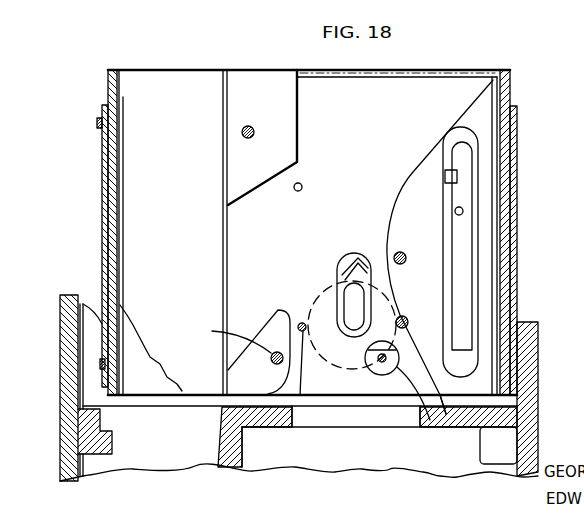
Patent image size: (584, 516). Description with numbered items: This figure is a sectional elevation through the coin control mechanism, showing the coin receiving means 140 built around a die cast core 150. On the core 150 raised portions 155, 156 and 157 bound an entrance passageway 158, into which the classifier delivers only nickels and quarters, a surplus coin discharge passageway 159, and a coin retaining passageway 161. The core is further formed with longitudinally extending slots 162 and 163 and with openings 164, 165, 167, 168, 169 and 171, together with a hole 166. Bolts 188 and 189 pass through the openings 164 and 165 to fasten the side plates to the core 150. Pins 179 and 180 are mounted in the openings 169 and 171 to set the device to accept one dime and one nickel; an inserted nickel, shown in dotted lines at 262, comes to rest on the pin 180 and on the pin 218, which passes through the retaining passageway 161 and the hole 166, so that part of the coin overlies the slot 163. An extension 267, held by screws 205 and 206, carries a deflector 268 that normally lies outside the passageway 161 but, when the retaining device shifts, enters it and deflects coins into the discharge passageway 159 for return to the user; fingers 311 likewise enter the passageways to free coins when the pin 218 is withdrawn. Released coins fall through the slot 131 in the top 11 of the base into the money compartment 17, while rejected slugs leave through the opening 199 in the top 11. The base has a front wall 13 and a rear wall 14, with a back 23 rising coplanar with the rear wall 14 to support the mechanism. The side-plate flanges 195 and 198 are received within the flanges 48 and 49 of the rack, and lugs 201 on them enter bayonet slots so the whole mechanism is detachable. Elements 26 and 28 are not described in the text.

The coin receiving means 140 is at (262, 83).
The entrance passageway 158 is at (427, 92).
The flange 48 is at (100, 110).
The lug 201 is at (100, 128).
The die cast core 150 is at (238, 98).
The flange 198 is at (503, 202).
The flange 49 is at (515, 107).
The flange 195 is at (110, 190).
The frame member 26 is at (65, 374).
The flange 28 is at (75, 426).
The front wall 13 is at (65, 459).
The opening 199 is at (163, 447).
The money compartment 17 is at (273, 451).
The slot 131 is at (377, 414).
The coin retaining passageway 161 is at (342, 356).
The top 11 is at (500, 412).
The back 23 is at (537, 374).
The rear wall 14 is at (533, 451).
The surplus coin discharge passageway 159 is at (243, 250).
The raised portion 155 is at (290, 132).
The opening 164 is at (254, 128).
The bolt 188 is at (250, 140).
The opening 169 is at (305, 185).
The pin 179 is at (295, 190).
The slot 162 is at (448, 132).
The finger 311 is at (463, 155).
The raised portion 156 is at (427, 193).
The hole 166 is at (440, 424).
The extension 267 is at (372, 273).
The slot 163 is at (342, 260).
The deflector 268 is at (350, 263).
The coin 262 is at (305, 301).
The opening 167 is at (400, 252).
The screw 205 is at (403, 257).
The screw 206 is at (400, 318).
The opening 168 is at (407, 318).
The pin 218 is at (380, 367).
The opening 171 is at (300, 323).
The pin 180 is at (309, 363).
The raised portion 157 is at (277, 332).
The bolt 189 is at (228, 338).
The opening 165 is at (273, 364).